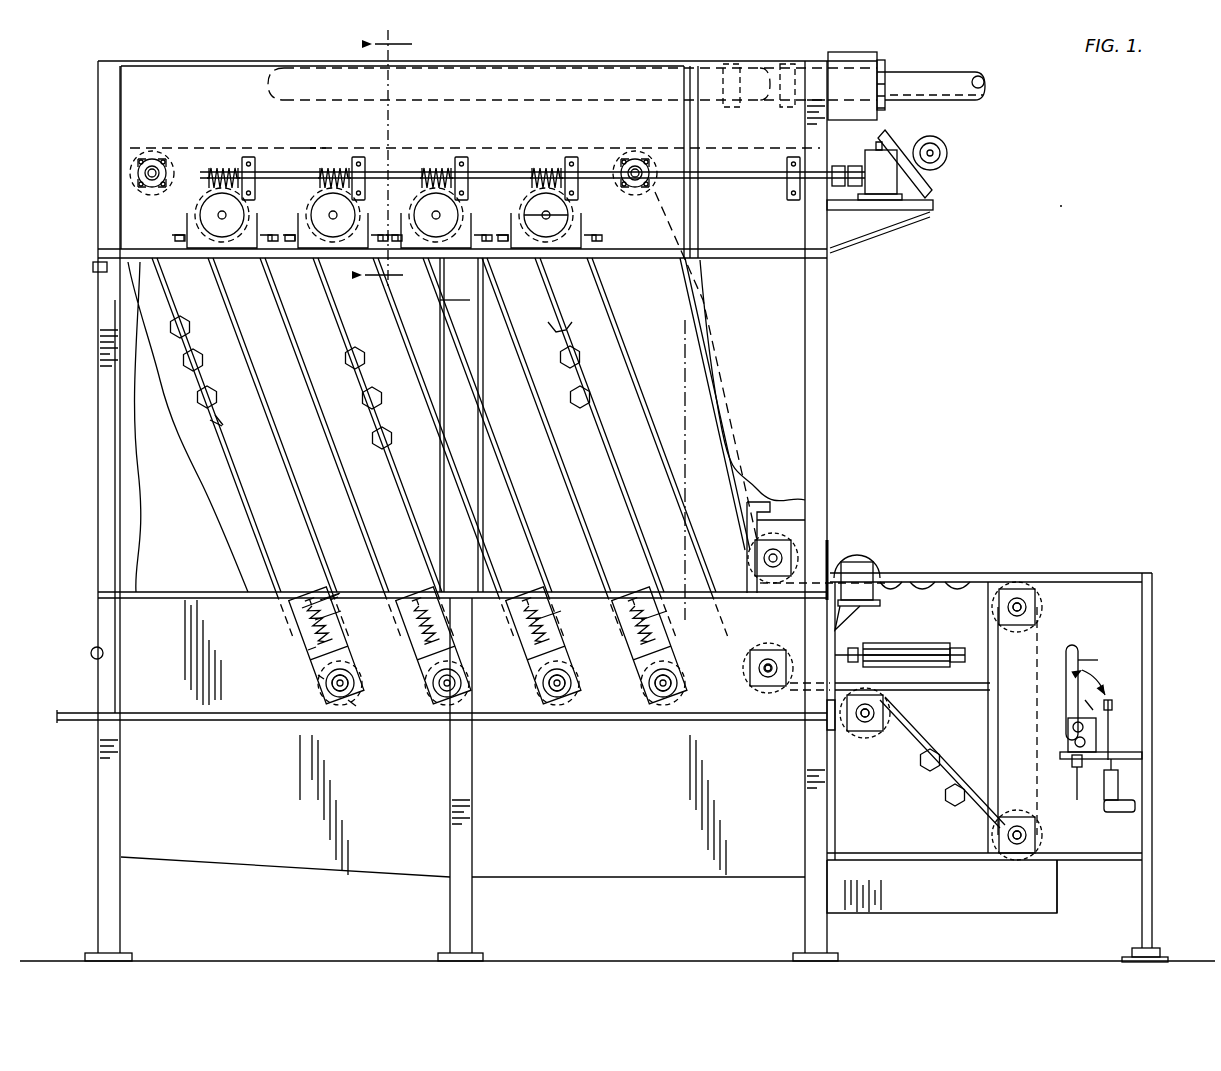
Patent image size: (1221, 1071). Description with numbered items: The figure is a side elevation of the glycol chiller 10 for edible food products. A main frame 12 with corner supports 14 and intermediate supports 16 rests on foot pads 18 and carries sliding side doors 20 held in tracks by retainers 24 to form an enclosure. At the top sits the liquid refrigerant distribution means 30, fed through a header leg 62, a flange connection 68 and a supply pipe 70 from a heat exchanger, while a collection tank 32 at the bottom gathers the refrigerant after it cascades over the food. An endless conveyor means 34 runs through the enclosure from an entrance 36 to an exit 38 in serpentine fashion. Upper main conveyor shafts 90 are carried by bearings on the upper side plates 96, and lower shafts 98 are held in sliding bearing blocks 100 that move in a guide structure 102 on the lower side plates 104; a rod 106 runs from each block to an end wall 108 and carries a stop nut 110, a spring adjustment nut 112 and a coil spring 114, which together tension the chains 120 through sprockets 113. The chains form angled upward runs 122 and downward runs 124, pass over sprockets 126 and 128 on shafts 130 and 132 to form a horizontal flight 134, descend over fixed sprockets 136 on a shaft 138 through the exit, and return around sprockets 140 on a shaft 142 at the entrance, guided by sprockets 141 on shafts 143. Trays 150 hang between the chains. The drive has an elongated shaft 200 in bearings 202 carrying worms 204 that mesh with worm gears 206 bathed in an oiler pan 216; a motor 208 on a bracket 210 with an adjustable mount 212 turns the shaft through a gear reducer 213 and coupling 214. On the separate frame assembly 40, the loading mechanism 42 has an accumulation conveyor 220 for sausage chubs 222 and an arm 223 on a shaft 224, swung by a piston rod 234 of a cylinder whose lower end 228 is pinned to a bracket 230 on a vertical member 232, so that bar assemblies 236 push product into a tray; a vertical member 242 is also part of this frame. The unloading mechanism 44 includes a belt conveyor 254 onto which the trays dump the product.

The glycol chiller 10 is at (1068, 205).
The main frame 12 is at (843, 353).
The corner supports 14 is at (828, 395).
The intermediate supports 16 is at (474, 777).
The foot pads 18 is at (802, 957).
The side doors 20 is at (170, 451).
The retainers 24 is at (95, 262).
The liquid refrigerant supply or distribution means 30 is at (712, 60).
The collection tank 32 is at (272, 794).
The endless conveyor means 34 is at (702, 288).
The entrance 36 is at (830, 712).
The exit 38 is at (830, 558).
The frame assembly 40 is at (1108, 573).
The food product load mechanism 42 is at (1112, 668).
The food product unloading mechanism 44 is at (880, 574).
The leg of header assembly 62 is at (585, 75).
The flange connection 68 is at (880, 58).
The supply pipe 70 is at (937, 74).
The main conveyor shafts 90 is at (546, 215).
The upper side plates 96 is at (162, 89).
The lower shafts 98 is at (662, 692).
The sliding bearing blocks 100 is at (560, 690).
The guide structure 102 is at (303, 652).
The lower side plates 104 is at (181, 671).
The rod 106 is at (662, 650).
The end wall 108 is at (300, 614).
The stop nut 110 is at (328, 604).
The spring adjustment nut 112 is at (322, 680).
The sprockets 113 is at (355, 705).
The coil spring 114 is at (338, 640).
The chains 120 is at (622, 352).
The upward runs 122 is at (605, 300).
The downward runs 124 is at (582, 380).
The sprocket 126 is at (128, 165).
The sprocket 128 is at (640, 157).
The shaft 130 is at (152, 163).
The shaft 132 is at (645, 170).
The horizontal flight 134 is at (316, 146).
The fixed sprockets 136 is at (752, 510).
The shaft 138 is at (778, 555).
The sprockets 140 is at (778, 650).
The sprockets 141 is at (1017, 815).
The shaft 142 is at (772, 688).
The shafts 143 is at (1015, 850).
The trays 150 is at (372, 355).
The elongated shaft 200 is at (745, 165).
The bearings 202 is at (794, 160).
The worms 204 is at (335, 178).
The worm gears 206 is at (570, 215).
The motor 208 is at (948, 150).
The bracket 210 is at (905, 212).
The adjustable motor mount 212 is at (934, 186).
The gear reducer 213 is at (880, 195).
The shaft coupling 214 is at (845, 165).
The worm gear oiler pan 216 is at (312, 256).
The conveyor 220 is at (1097, 758).
The sausage chubs 222 is at (1100, 742).
The arm 223 is at (1078, 660).
The elongated shaft 224 is at (1087, 705).
The lower end of cylinder 228 is at (1117, 785).
The bracket 230 is at (1130, 815).
The vertical member 232 is at (1152, 868).
The piston rod 234 is at (1112, 712).
The bar assemblies 236 is at (1088, 770).
The vertical member 242 is at (1000, 702).
The belt conveyor 254 is at (900, 642).